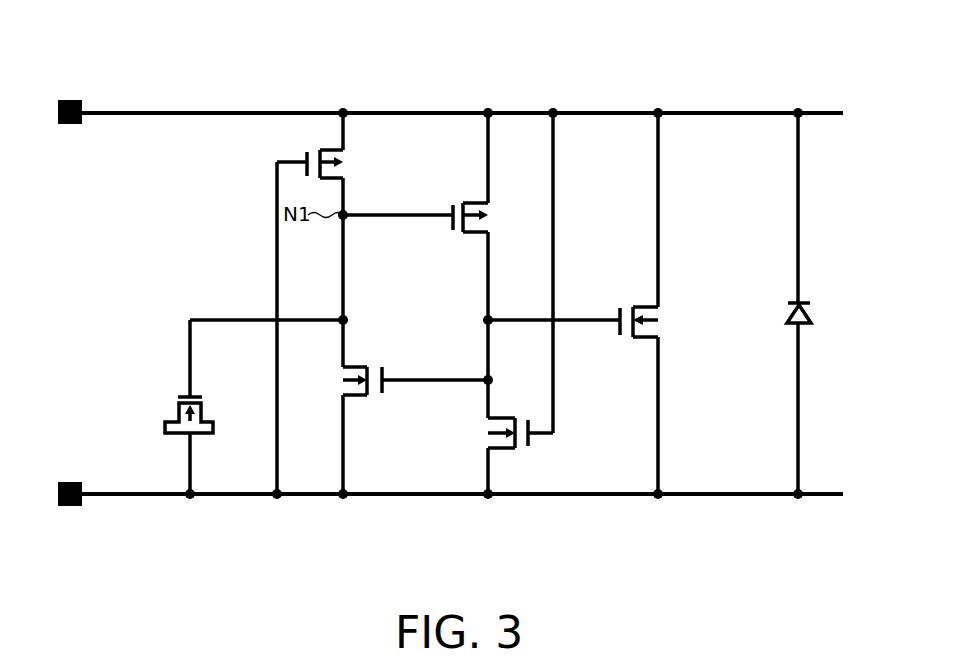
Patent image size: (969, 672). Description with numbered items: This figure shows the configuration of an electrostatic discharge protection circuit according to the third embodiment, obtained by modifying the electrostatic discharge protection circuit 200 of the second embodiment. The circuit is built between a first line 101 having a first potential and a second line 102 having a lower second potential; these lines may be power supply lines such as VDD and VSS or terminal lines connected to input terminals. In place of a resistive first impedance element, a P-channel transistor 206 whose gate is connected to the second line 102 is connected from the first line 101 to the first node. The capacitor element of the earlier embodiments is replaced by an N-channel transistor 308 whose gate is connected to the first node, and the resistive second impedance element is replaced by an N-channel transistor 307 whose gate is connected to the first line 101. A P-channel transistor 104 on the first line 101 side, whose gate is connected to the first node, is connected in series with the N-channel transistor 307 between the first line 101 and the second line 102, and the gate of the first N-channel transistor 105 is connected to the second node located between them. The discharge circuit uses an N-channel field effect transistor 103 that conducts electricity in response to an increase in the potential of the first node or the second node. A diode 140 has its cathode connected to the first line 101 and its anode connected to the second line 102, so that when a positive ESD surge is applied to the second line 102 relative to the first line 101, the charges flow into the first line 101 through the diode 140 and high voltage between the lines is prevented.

The first line 101 is at (80, 97).
The second line 102 is at (82, 506).
The field effect transistor 103 is at (667, 318).
The P-channel transistor 104 is at (500, 212).
The first N-channel transistor 105 is at (357, 403).
The diode 140 is at (812, 315).
The electrostatic discharge protection circuit 200 is at (710, 58).
The P-channel transistor 206 is at (352, 147).
The N-channel transistor 307 is at (508, 455).
The N-channel transistor 308 is at (222, 418).